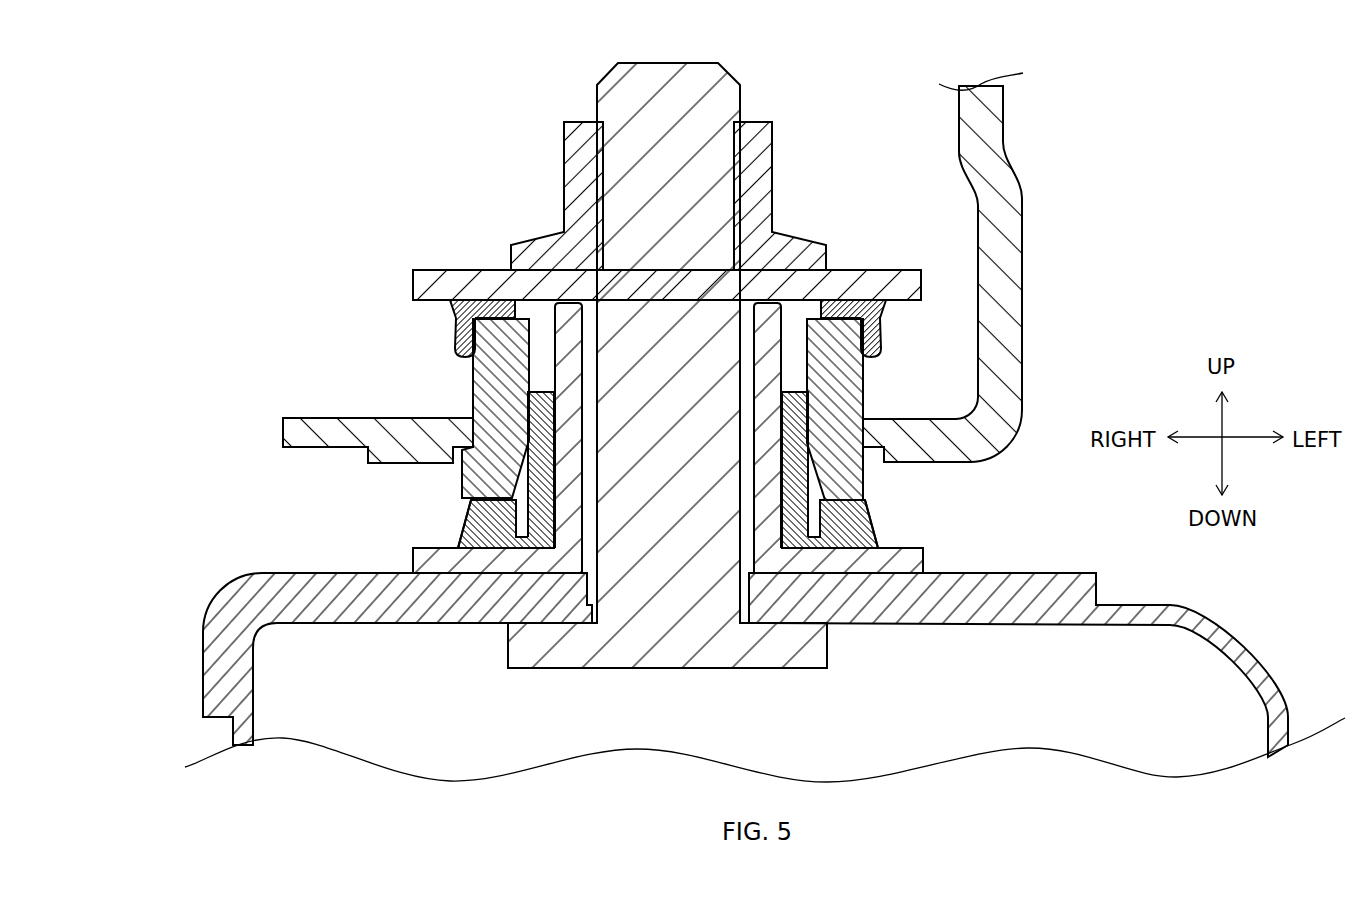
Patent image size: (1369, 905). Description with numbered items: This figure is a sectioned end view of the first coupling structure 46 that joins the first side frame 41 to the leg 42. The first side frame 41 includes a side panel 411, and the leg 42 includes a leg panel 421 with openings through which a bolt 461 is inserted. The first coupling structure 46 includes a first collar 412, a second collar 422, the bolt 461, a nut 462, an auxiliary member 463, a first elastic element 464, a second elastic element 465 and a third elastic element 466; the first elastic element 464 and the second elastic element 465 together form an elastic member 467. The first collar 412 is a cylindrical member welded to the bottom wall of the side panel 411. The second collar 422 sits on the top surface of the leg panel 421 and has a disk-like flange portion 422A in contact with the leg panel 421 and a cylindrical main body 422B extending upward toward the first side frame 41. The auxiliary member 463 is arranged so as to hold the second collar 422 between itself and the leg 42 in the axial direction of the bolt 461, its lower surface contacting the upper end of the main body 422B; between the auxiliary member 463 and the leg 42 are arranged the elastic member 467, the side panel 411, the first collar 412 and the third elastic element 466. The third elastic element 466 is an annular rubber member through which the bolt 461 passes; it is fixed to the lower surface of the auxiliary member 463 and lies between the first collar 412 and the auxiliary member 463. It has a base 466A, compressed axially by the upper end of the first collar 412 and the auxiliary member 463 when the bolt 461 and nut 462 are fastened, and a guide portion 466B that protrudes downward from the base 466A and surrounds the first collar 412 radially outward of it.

The first side frame 41 is at (710, 286).
The side panel 411 is at (1015, 258).
The first collar 412 is at (848, 383).
The leg 42 is at (706, 530).
The leg panel 421 is at (240, 583).
The second collar 422 is at (611, 438).
The flange portion 422A is at (611, 555).
The main body 422B is at (560, 482).
The first coupling structure 46 is at (662, 384).
The bolt 461 is at (722, 654).
The nut 462 is at (563, 127).
The auxiliary member 463 is at (437, 270).
The first elastic element 464 is at (729, 470).
The second elastic element 465 is at (795, 473).
The third elastic element 466 is at (605, 296).
The base 466A is at (483, 300).
The guide portion 466B is at (460, 346).
The elastic member 467 is at (884, 540).